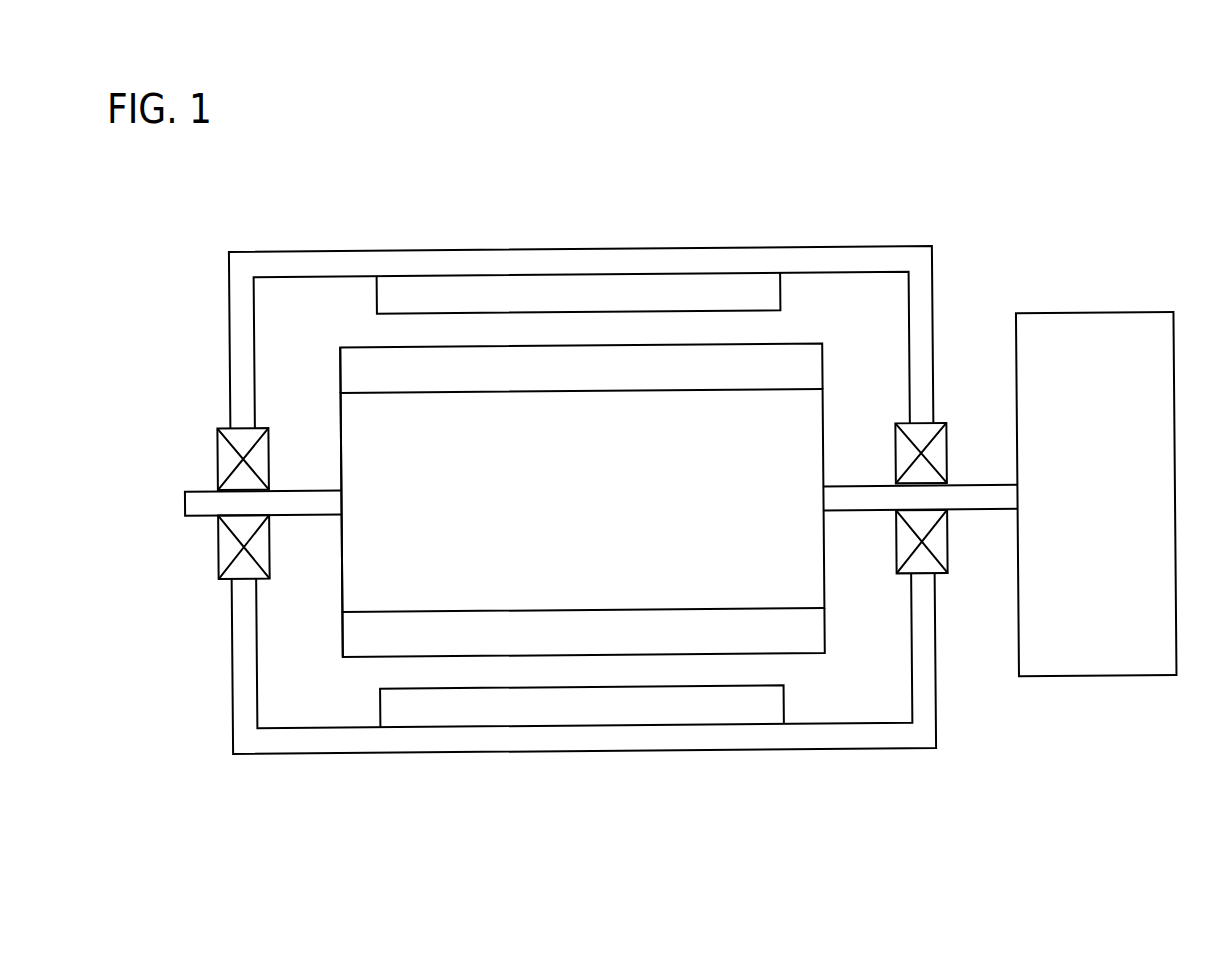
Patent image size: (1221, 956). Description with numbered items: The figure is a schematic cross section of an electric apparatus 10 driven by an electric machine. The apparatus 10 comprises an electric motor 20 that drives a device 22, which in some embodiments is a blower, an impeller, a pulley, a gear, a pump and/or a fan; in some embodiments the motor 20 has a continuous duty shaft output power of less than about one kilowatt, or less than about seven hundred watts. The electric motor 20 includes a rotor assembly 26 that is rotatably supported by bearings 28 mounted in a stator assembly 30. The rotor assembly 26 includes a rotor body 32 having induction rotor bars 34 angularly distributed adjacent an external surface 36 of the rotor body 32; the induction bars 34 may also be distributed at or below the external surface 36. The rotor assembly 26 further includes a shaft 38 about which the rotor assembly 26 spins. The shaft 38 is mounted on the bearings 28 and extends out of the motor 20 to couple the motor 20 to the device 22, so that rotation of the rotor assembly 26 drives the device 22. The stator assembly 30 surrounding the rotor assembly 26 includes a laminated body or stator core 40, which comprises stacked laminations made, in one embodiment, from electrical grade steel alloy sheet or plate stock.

The electric apparatus 10 is at (1087, 113).
The electric motor 20 is at (622, 195).
The device 22 is at (1097, 313).
The rotor assembly 26 is at (324, 600).
The bearings 28 is at (218, 460).
The stator assembly 30 is at (743, 231).
The rotor body 32 is at (570, 504).
The induction rotor bars 34 is at (540, 655).
The external surface 36 is at (368, 657).
The shaft 38 is at (978, 509).
The stator core 40 is at (618, 739).